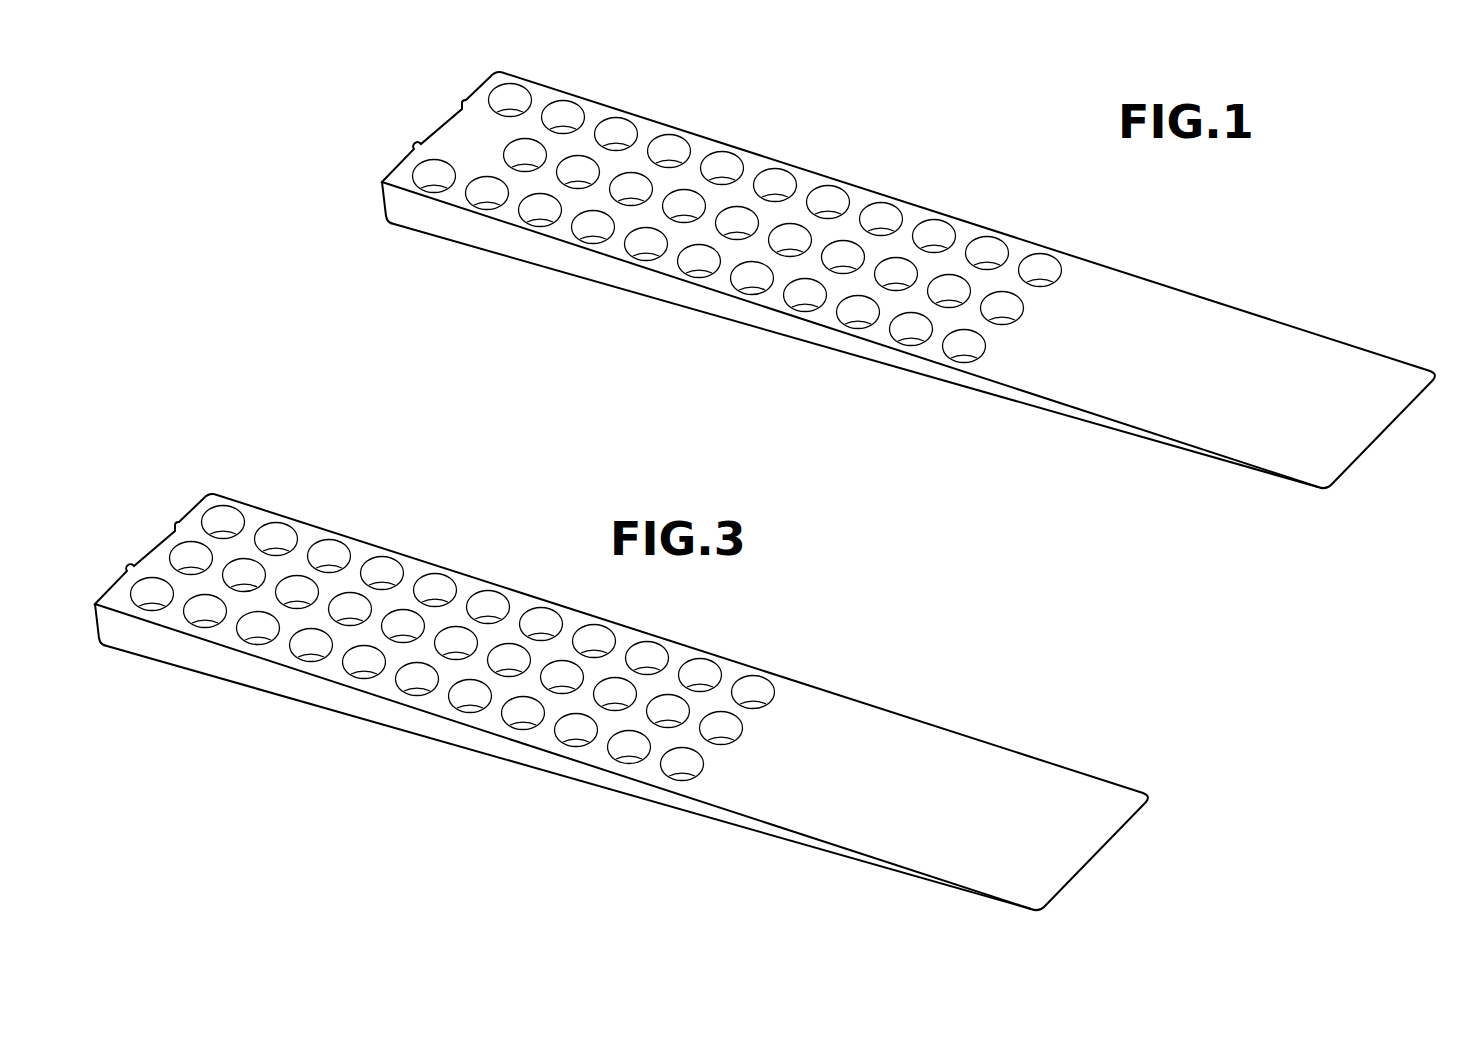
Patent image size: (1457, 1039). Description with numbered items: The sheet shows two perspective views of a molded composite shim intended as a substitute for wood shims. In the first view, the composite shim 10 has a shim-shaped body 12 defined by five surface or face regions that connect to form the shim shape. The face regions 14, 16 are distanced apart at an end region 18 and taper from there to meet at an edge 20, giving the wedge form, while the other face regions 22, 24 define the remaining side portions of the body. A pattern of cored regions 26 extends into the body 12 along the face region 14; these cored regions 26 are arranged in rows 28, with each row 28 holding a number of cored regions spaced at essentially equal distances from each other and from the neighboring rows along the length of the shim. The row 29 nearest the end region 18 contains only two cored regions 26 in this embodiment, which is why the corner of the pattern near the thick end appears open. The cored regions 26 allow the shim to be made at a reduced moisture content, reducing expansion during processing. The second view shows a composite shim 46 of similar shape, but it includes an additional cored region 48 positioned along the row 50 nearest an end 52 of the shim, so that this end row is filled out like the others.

In FIG. 1, the composite shim 10 is at (1226, 245).
In FIG. 1, the shim-shaped body 12 is at (1330, 365).
In FIG. 1, the face region 14 is at (1188, 384).
In FIG. 1, the face region 16 is at (965, 392).
In FIG. 1, the end region 18 is at (440, 128).
In FIG. 1, the edge 20 is at (1383, 433).
In FIG. 1, the face region 22 is at (583, 260).
In FIG. 1, the face region 24 is at (918, 204).
In FIG. 1, the cored regions 26 is at (512, 97).
In FIG. 1, the rows 28 is at (638, 110).
In FIG. 1, the row 29 is at (533, 77).
In FIG. 3, the composite shim 46 is at (931, 688).
In FIG. 3, the additional cored region 48 is at (187, 558).
In FIG. 3, the row 50 is at (248, 502).
In FIG. 3, the end 52 is at (180, 530).